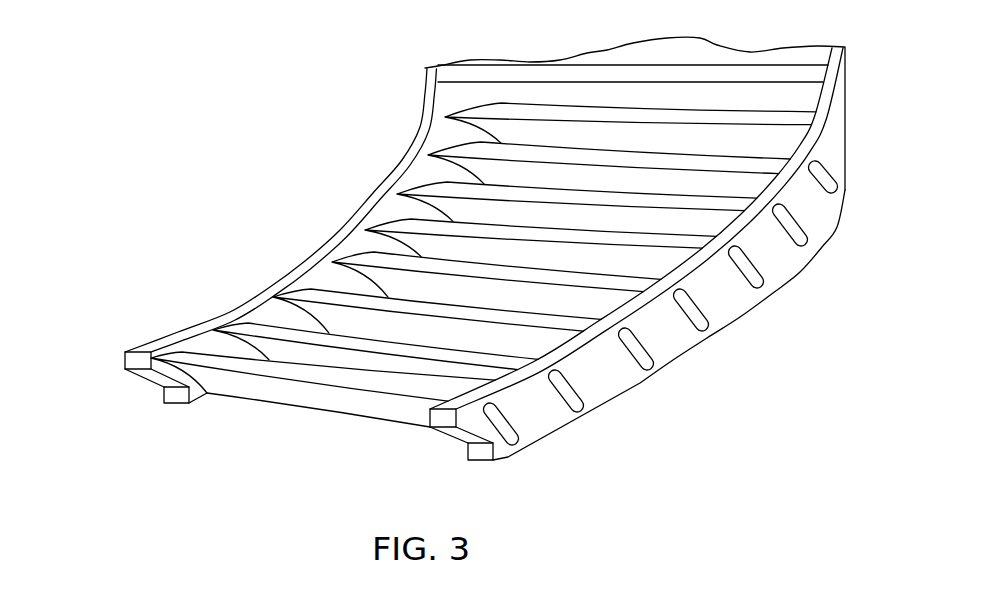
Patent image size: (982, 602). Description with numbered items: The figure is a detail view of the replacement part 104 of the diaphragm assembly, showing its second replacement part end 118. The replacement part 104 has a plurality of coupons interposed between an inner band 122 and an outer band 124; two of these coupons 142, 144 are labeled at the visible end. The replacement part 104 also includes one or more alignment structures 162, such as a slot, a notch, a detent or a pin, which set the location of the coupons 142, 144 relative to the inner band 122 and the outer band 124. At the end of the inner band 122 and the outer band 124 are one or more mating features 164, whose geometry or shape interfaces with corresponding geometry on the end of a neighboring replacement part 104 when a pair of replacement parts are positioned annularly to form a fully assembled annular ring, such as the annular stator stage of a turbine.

The replacement part 104 is at (268, 89).
The second replacement part end 118 is at (461, 252).
The inner band 122 is at (307, 260).
The outer band 124 is at (627, 385).
The coupon 142 is at (210, 358).
The coupon 144 is at (263, 330).
The alignment structure 162 is at (517, 449).
The mating feature 164 is at (117, 350).